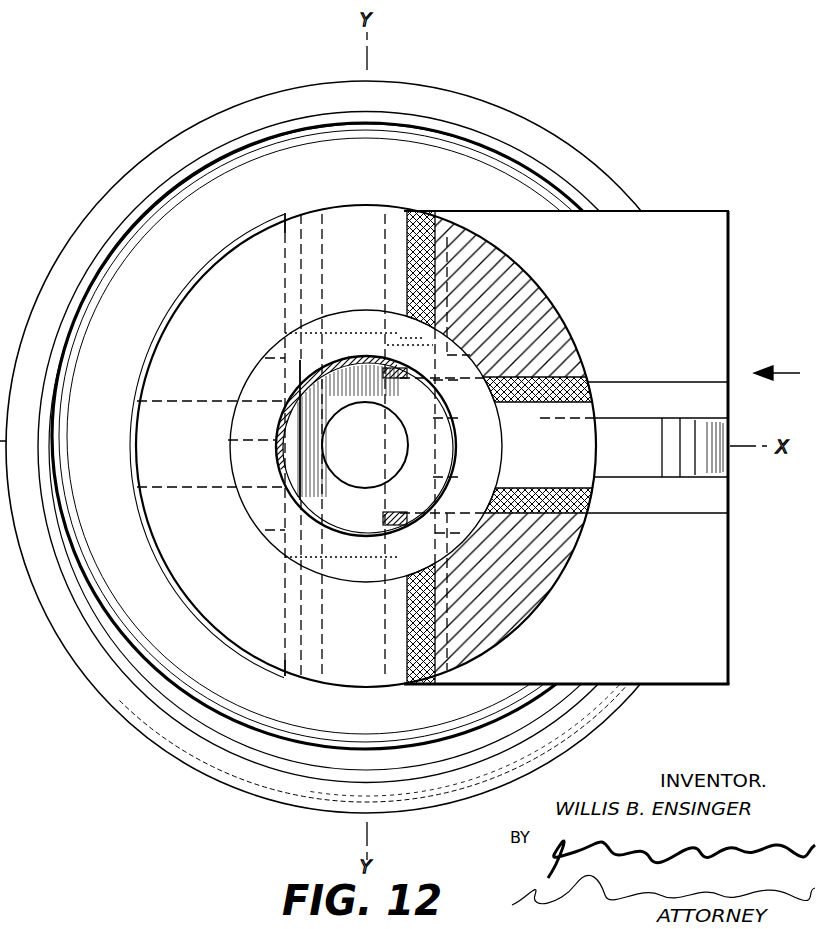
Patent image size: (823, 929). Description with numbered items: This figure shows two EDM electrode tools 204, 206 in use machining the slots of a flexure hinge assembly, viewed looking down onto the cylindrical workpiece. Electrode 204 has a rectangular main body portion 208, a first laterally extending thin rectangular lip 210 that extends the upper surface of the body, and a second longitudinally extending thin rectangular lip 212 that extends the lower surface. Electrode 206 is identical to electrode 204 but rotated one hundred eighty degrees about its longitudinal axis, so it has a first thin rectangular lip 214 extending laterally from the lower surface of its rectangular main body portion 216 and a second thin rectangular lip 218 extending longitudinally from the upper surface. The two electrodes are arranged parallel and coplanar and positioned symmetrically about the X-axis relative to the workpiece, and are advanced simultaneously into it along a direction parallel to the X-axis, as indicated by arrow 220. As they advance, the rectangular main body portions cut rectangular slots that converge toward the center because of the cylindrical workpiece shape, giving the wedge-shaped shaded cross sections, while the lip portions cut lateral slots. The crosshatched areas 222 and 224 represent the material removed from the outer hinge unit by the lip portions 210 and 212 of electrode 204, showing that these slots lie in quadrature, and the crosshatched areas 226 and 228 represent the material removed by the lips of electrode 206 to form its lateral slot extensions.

The EDM electrode tool 204 is at (700, 257).
The EDM electrode tool 206 is at (692, 668).
The rectangular main body portion 208 is at (516, 222).
The first laterally extending thin rectangular lip 210 is at (626, 421).
The second longitudinally extending thin rectangular lip 212 is at (383, 268).
The first thin rectangular lip 214 is at (648, 476).
The rectangular main body portion 216 is at (490, 685).
The second thin rectangular lip 218 is at (384, 603).
The arrow 220 is at (796, 373).
The crosshatched area 222 is at (432, 230).
The crosshatched area 224 is at (587, 368).
The crosshatched area 226 is at (538, 481).
The crosshatched area 228 is at (407, 627).